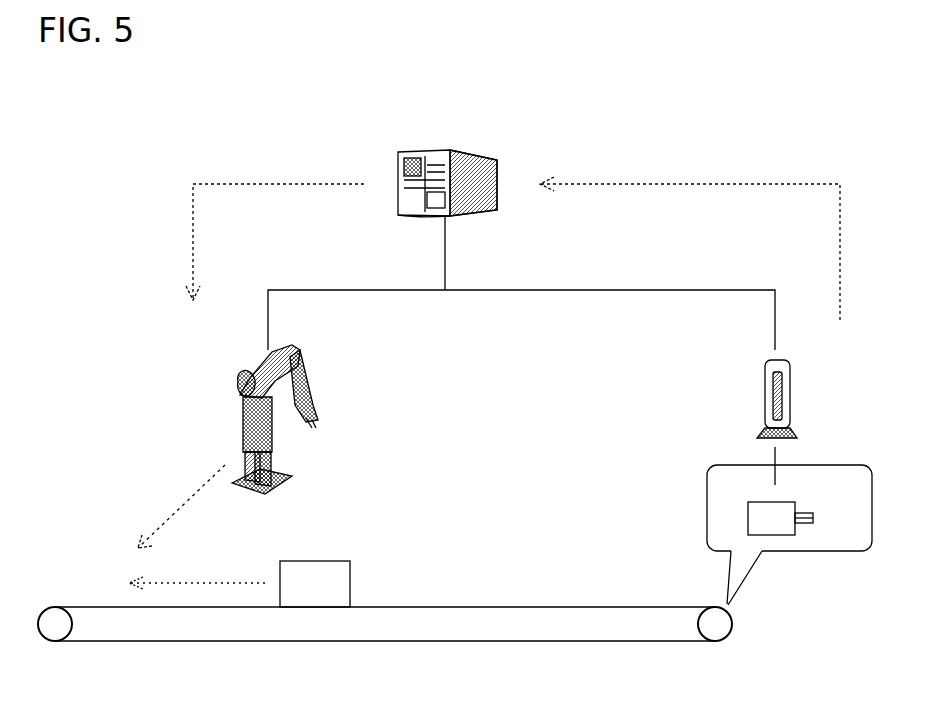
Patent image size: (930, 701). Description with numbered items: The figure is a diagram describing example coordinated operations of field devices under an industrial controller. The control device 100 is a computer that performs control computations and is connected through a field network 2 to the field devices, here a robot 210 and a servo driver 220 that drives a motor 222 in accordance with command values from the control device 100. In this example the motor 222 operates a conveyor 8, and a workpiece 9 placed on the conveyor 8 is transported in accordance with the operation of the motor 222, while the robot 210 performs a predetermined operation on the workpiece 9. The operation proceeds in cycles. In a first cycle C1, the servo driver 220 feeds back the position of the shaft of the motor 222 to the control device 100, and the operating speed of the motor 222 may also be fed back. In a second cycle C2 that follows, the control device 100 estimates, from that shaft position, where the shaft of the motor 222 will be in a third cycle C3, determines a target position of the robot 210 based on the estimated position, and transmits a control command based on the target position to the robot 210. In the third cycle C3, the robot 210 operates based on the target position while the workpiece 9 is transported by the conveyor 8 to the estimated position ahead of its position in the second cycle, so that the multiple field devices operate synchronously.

The control device 100 is at (497, 160).
The field network 2 is at (740, 290).
The robot 210 is at (240, 392).
The servo driver 220 is at (790, 395).
The motor 222 is at (805, 505).
The conveyor 8 is at (568, 607).
The workpiece 9 is at (352, 565).
The first cycle C1 is at (690, 184).
The second cycle C2 is at (275, 184).
The third cycle C3 is at (183, 507).